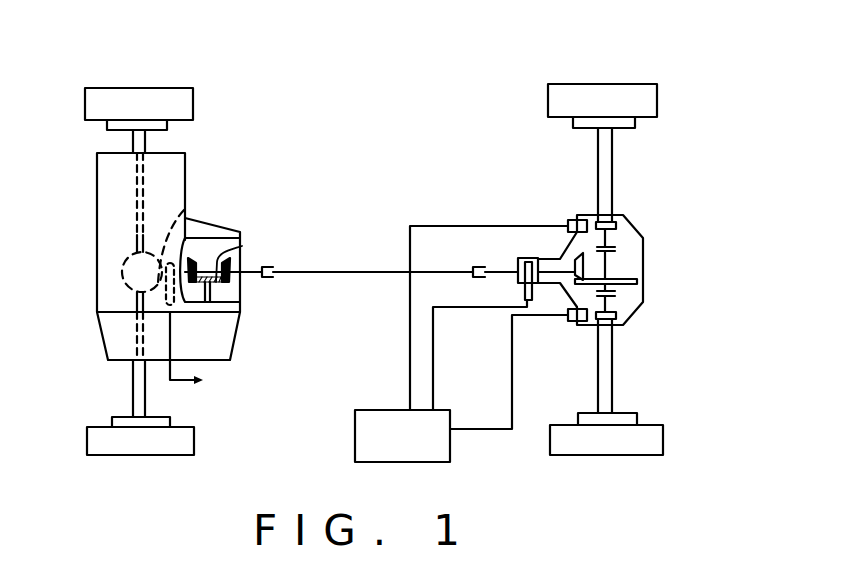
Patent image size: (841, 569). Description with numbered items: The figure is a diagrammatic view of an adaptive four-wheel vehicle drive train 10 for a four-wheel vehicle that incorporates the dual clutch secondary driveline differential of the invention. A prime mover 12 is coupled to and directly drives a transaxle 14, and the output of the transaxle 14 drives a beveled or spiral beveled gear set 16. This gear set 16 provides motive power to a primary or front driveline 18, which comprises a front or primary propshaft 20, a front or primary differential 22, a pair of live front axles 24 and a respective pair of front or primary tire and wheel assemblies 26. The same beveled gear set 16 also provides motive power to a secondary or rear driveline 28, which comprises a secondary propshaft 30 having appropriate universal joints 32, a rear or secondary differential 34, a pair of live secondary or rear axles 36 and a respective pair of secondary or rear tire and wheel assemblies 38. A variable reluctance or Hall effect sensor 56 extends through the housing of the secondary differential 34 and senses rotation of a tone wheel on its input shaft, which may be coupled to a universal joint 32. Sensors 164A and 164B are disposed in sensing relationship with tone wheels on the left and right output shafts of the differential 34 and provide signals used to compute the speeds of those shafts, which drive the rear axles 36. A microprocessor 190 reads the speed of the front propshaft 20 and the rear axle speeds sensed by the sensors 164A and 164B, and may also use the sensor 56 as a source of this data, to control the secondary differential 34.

The four-wheel vehicle drive train 10 is at (394, 92).
The prime mover 12 is at (185, 174).
The transaxle 14 is at (227, 340).
The beveled or spiral beveled gear set 16 is at (243, 247).
The primary or front driveline 18 is at (91, 256).
The front or primary propshaft 20 is at (196, 193).
The front or primary differential 22 is at (130, 274).
The live front axles 24 is at (133, 142).
The front or primary tire and wheel assemblies 26 is at (193, 101).
The secondary or rear driveline 28 is at (324, 355).
The secondary propshaft 30 is at (370, 268).
The universal joints 32 is at (263, 278).
The rear or secondary differential 34 is at (644, 243).
The live secondary or rear axles 36 is at (612, 160).
The secondary or rear tire and wheel assemblies 38 is at (657, 101).
The sensor 56 is at (525, 290).
The variable reluctance or Hall effect sensor 164A is at (575, 323).
The variable reluctance or Hall effect sensor 164B is at (577, 218).
The microprocessor 190 is at (440, 462).